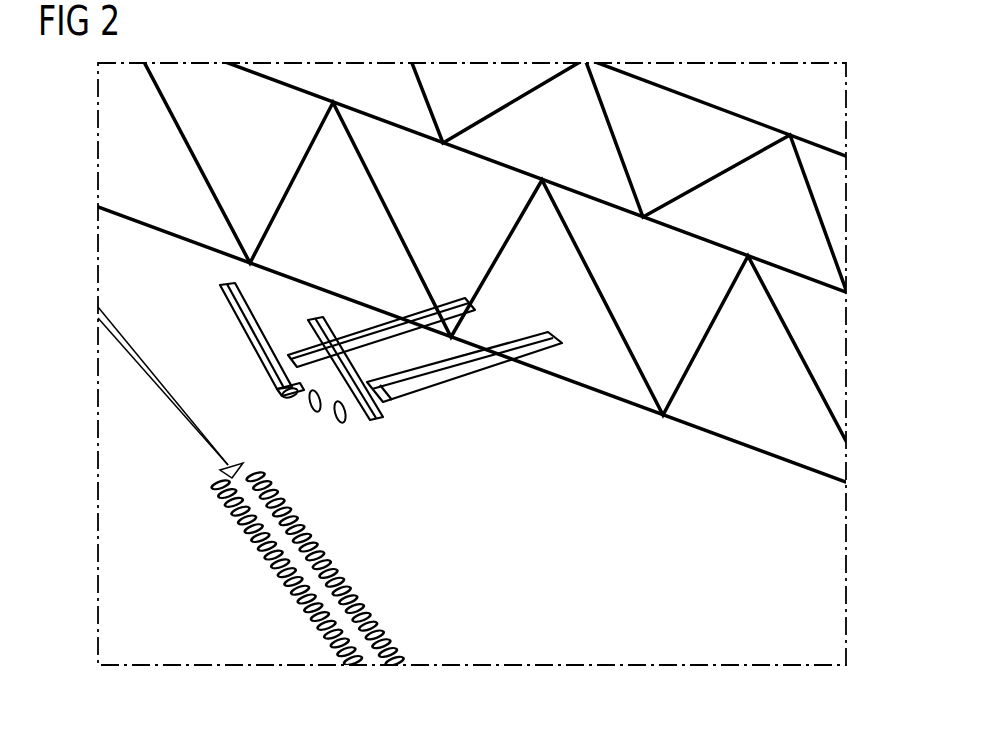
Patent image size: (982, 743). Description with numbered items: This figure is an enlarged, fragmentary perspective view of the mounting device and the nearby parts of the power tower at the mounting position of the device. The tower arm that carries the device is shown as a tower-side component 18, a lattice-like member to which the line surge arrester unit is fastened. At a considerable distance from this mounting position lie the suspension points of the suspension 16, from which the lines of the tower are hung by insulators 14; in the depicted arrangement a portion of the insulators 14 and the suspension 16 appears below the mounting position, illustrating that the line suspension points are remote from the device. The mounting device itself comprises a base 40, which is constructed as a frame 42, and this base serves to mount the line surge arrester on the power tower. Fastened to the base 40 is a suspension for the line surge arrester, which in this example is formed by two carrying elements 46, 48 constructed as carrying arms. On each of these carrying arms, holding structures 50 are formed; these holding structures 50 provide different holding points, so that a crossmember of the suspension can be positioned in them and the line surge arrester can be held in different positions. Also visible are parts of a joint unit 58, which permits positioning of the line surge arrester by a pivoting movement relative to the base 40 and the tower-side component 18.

The insulators 14 is at (300, 611).
The suspension 16 is at (118, 334).
The tower-side component 18 is at (659, 85).
The base 40 is at (505, 376).
The frame 42 is at (464, 390).
The carrying element 46 is at (220, 287).
The carrying element 48 is at (312, 337).
The holding structures 50 is at (266, 307).
The joint unit 58 is at (356, 436).